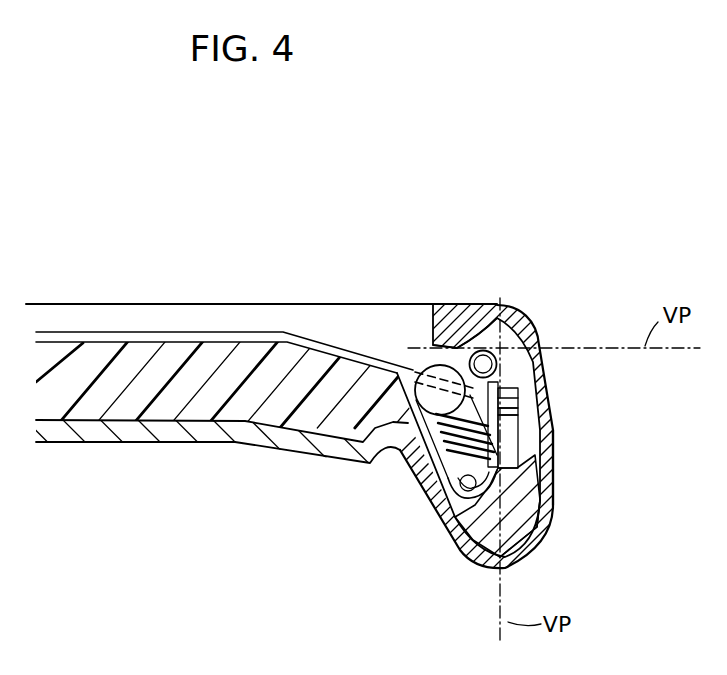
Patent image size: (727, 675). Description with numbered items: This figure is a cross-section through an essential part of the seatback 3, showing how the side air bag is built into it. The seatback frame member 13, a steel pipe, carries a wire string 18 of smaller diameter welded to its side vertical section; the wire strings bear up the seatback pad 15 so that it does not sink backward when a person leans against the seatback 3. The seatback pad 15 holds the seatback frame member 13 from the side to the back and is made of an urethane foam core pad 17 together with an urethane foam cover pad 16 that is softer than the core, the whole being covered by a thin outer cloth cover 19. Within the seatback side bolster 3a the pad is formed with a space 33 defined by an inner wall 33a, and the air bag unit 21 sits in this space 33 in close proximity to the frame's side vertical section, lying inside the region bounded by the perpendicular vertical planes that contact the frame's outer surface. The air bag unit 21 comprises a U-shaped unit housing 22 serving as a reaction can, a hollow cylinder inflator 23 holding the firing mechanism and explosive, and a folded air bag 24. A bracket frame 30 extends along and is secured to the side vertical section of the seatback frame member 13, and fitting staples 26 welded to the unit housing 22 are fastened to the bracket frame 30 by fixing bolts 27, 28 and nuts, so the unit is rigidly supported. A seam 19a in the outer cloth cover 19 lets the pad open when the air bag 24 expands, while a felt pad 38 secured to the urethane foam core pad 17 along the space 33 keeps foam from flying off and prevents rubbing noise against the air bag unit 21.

The seatback 3 is at (293, 258).
The seatback side bolster 3a is at (437, 523).
The seatback frame member 13 is at (500, 348).
The seatback pad 15 is at (104, 503).
The urethane foam cover pad 16 is at (236, 433).
The urethane foam core pad 17 is at (160, 412).
The wire string 18 is at (93, 332).
The outer cloth cover 19 is at (235, 303).
The seam 19a is at (556, 490).
The air bag unit 21 is at (420, 322).
The unit housing 22 is at (415, 375).
The inflator 23 is at (478, 351).
The air bag 24 is at (422, 492).
The fitting staple 26 is at (541, 448).
The fixing bolt 27 is at (540, 403).
The fixing bolt 28 is at (540, 427).
The bracket frame 30 is at (543, 376).
The space 33 is at (470, 545).
The inner wall 33a is at (541, 535).
The felt pad 38 is at (400, 452).